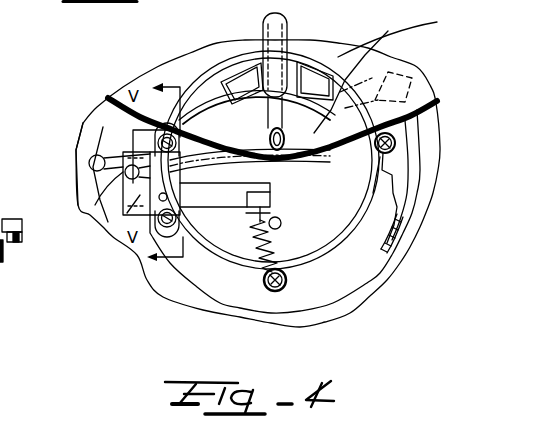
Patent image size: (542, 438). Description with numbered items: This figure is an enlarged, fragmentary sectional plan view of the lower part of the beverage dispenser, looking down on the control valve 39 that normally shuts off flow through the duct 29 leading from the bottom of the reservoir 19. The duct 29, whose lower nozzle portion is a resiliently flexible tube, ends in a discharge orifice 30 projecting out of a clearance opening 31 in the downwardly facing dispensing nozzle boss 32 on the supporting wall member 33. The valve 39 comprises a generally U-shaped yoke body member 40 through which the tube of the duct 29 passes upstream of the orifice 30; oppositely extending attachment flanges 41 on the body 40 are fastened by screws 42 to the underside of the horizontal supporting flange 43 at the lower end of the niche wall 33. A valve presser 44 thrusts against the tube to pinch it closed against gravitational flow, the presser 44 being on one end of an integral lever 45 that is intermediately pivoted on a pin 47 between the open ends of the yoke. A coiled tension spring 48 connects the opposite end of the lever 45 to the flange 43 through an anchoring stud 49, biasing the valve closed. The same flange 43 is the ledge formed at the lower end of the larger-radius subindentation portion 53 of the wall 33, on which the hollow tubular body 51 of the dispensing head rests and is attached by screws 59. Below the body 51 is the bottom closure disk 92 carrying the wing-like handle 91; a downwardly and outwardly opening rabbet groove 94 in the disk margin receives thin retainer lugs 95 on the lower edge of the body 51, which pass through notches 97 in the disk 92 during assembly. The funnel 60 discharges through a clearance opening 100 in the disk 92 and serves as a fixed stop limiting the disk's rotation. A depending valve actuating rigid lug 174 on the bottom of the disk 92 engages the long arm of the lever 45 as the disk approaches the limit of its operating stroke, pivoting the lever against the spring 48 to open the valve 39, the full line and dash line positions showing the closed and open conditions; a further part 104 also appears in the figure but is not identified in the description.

The reservoir 19 is at (80, 195).
The duct 29 is at (88, 165).
The discharge orifice 30 is at (361, 74).
The clearance opening 31 is at (281, 113).
The dispensing nozzle boss 32 is at (305, 157).
The supporting wall member 33 is at (427, 100).
The control valve 39 is at (98, 182).
The body member 40 is at (201, 123).
The attachment flanges 41 is at (150, 152).
The screws 42 is at (153, 140).
The horizontal supporting flange 43 is at (323, 283).
The valve presser 44 is at (110, 200).
The lever 45 is at (262, 150).
The pin 47 is at (127, 213).
The coiled tension spring 48 is at (277, 250).
The anchoring stud 49 is at (273, 291).
The body 51 is at (410, 237).
The subindentation portion 53 is at (403, 267).
The screws 59 is at (397, 140).
The funnel 60 is at (213, 84).
The handle 91 is at (281, 41).
The bottom closure disk 92 is at (338, 171).
The rabbet groove 94 is at (284, 128).
The retainer lugs 95 is at (247, 44).
The notches 97 is at (400, 187).
The clearance opening 100 is at (205, 90).
The stem 104 is at (278, 64).
The valve actuating lug 174 is at (275, 193).